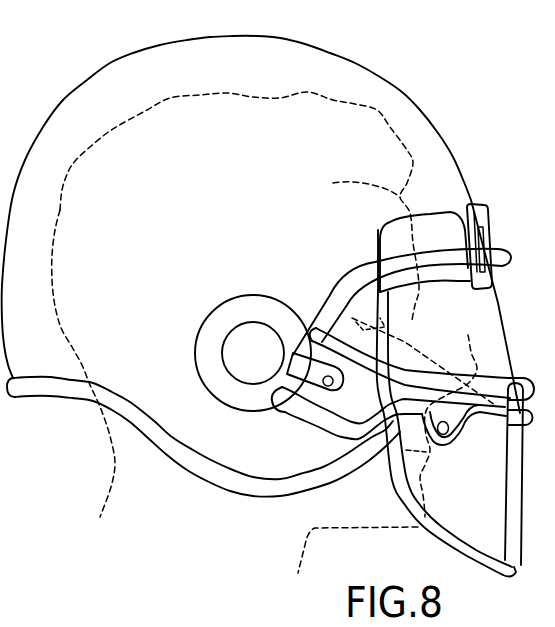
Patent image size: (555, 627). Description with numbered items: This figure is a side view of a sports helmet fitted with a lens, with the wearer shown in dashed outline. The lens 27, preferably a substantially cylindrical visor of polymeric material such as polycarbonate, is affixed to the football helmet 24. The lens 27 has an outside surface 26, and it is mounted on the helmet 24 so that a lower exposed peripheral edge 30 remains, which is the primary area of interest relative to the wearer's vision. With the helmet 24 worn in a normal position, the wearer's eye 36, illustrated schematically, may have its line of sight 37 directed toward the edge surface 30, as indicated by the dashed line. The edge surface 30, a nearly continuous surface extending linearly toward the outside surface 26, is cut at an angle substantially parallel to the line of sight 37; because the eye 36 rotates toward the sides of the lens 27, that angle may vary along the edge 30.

The football helmet 24 is at (389, 80).
The outside surface 26 is at (212, 502).
The lens 27 is at (509, 338).
The lower exposed peripheral edge 30 is at (513, 418).
The wearer's eye 36 is at (358, 320).
The line of sight 37 is at (446, 414).